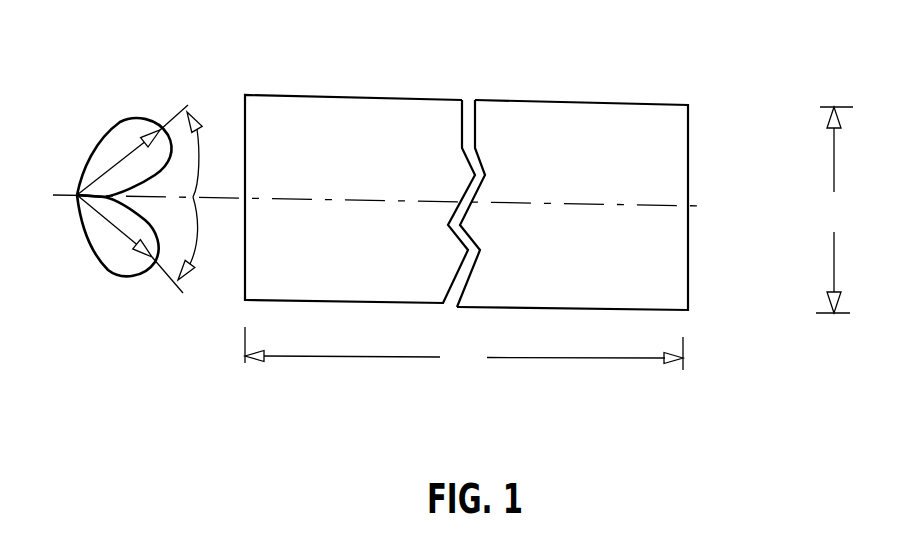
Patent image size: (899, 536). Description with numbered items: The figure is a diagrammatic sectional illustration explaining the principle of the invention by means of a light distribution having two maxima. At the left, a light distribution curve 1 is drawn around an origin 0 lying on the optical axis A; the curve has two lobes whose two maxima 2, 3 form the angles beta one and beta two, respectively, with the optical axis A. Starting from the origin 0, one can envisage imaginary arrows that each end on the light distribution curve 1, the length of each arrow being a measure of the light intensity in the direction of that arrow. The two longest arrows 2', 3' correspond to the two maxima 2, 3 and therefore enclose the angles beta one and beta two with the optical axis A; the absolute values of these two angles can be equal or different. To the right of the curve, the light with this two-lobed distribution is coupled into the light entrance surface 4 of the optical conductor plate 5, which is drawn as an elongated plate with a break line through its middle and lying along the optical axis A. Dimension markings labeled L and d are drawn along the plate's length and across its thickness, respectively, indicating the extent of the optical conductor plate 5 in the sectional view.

The light distribution curve 1 is at (92, 157).
The maximum 2 is at (132, 108).
The longest arrow 2' is at (120, 93).
The maximum 3 is at (130, 291).
The longest arrow 3' is at (114, 308).
The light entrance surface 4 is at (334, 241).
The optical conductor plate 5 is at (569, 80).
The origin 0 is at (45, 219).
The optical axis A is at (708, 206).
The length of light guide L is at (464, 351).
The diameter of light guide d is at (834, 210).